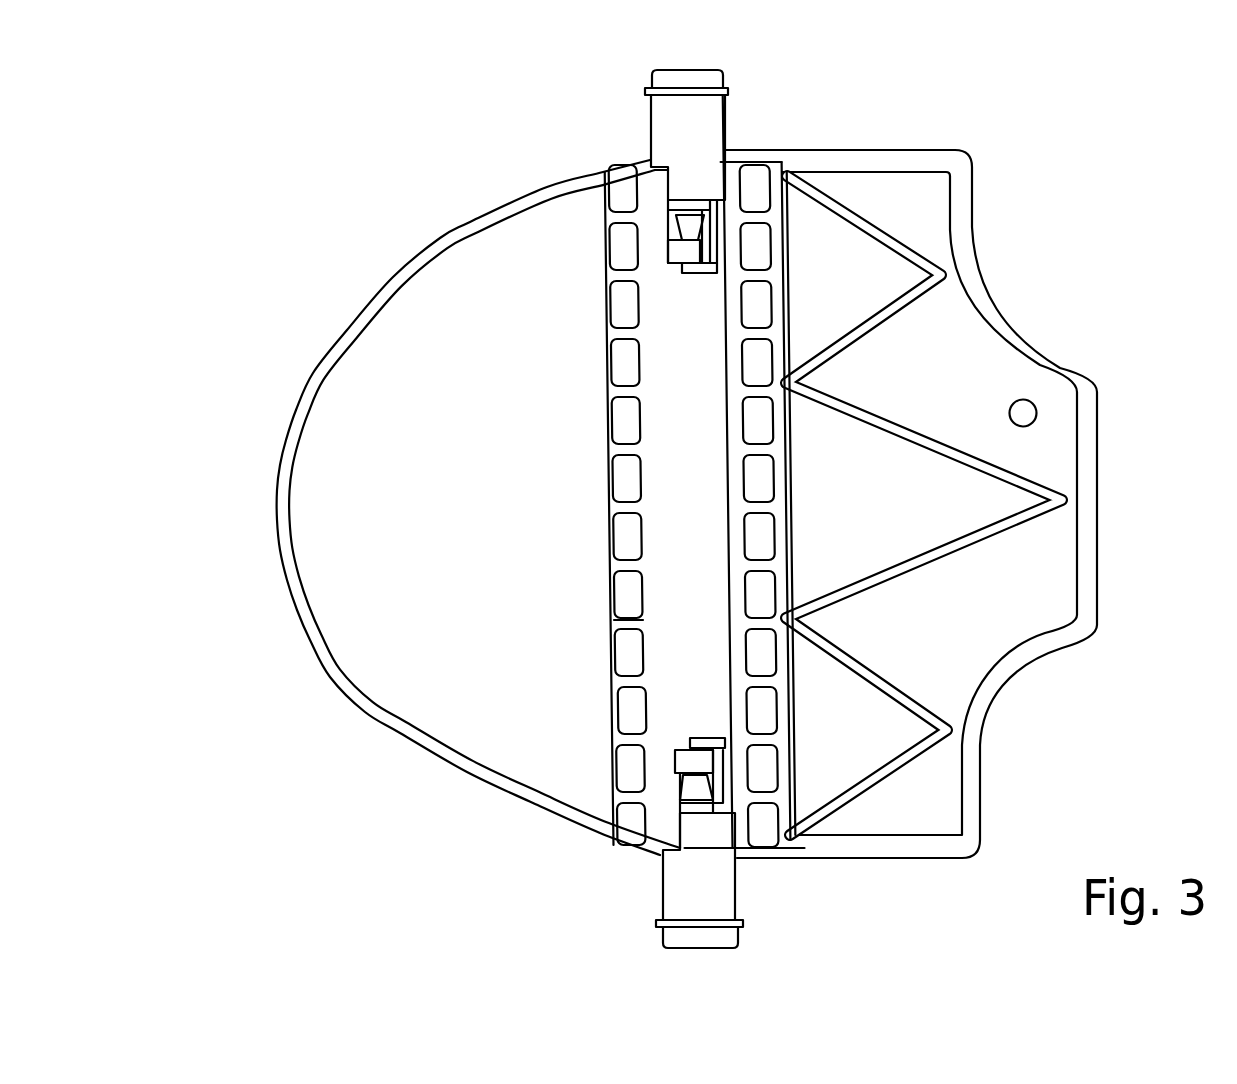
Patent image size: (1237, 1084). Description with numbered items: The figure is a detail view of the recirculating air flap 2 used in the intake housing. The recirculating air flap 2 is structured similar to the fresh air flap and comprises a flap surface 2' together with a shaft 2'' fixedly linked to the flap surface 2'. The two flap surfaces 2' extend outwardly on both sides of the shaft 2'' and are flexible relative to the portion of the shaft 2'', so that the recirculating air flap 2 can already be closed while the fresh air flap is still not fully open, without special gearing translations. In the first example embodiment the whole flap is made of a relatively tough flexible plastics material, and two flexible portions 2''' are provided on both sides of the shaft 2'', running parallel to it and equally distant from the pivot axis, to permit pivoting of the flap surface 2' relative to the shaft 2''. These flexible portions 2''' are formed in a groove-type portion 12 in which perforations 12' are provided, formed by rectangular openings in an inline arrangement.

The recirculating air flap 2 is at (424, 507).
The flap surface 2' is at (671, 504).
The shaft 2'' is at (628, 509).
The flexible portions 2''' is at (602, 464).
The groove-type portion 12 is at (537, 743).
The perforations 12' is at (579, 792).